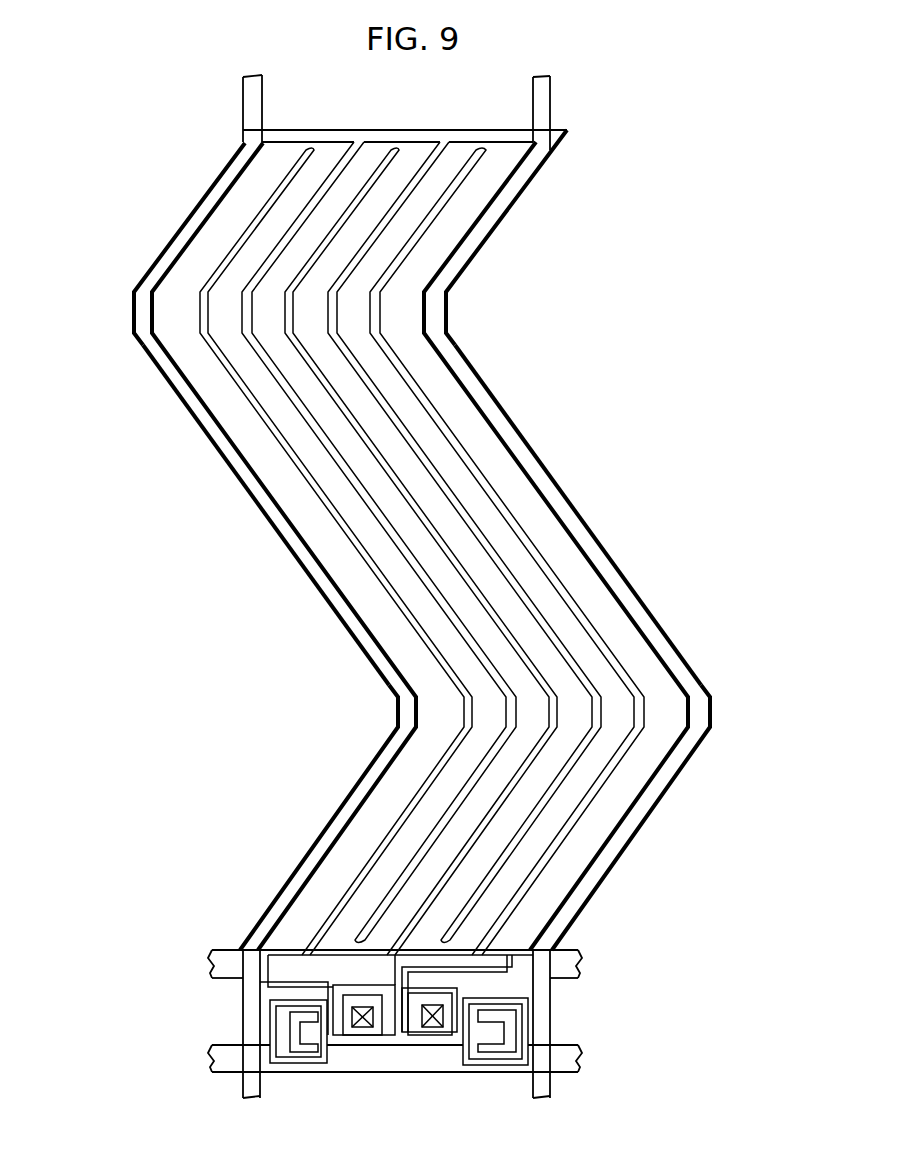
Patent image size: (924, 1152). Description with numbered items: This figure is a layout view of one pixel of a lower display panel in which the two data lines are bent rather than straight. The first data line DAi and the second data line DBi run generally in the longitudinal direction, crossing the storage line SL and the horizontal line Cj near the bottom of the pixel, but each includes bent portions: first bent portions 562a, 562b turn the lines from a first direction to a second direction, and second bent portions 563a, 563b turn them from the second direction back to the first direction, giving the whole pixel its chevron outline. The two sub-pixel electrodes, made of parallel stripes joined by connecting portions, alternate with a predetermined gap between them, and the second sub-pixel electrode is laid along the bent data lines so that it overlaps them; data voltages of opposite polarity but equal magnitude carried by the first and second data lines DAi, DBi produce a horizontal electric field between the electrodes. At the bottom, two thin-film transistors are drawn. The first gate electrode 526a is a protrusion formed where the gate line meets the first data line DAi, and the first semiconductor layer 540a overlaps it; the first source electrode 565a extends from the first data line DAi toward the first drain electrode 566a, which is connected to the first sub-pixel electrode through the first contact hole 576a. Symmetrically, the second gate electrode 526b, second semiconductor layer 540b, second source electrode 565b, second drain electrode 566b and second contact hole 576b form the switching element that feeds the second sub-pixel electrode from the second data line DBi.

The second bent portion 563a is at (133, 244).
The second bent portion 563b is at (506, 237).
The first bent portion 562a is at (319, 817).
The first bent portion 562b is at (683, 817).
The first data line DAi is at (266, 515).
The second data line DBi is at (578, 515).
The storage line SL is at (226, 950).
The column line Cj is at (235, 1078).
The first contact hole 576a is at (266, 984).
The first gate electrode 526a is at (272, 1008).
The first source electrode 565a is at (276, 1020).
The first drain electrode 566a is at (290, 1032).
The first semiconductor layer 540a is at (250, 1048).
The second contact hole 576b is at (533, 982).
The second gate electrode 526b is at (528, 1008).
The second source electrode 565b is at (522, 1020).
The second drain electrode 566b is at (512, 1032).
The second semiconductor layer 540b is at (545, 1048).